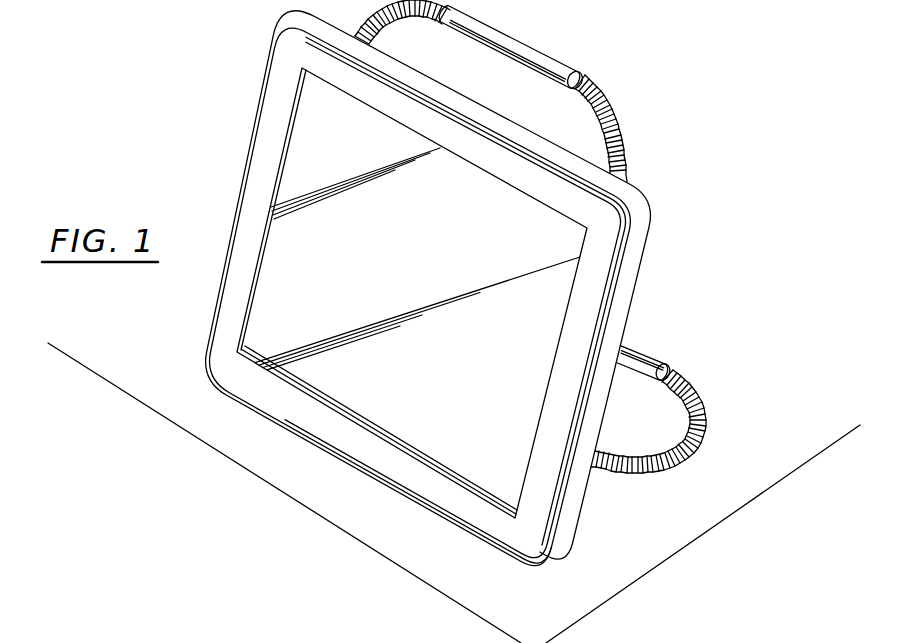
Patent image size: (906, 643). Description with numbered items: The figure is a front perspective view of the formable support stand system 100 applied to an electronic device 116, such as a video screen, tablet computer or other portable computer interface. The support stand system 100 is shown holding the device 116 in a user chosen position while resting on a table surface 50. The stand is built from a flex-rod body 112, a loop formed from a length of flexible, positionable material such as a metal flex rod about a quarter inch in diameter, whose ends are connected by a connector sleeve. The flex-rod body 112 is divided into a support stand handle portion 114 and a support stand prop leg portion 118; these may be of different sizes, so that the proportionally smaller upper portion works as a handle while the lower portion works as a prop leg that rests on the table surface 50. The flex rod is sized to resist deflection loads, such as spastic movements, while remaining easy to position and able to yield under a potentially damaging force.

The formable support stand system 100 is at (205, 58).
The electronic device 116 is at (247, 167).
The flex-rod body 112 is at (629, 22).
The support stand handle portion 114 is at (620, 108).
The support stand prop leg portion 118 is at (702, 386).
The table surface 50 is at (653, 522).